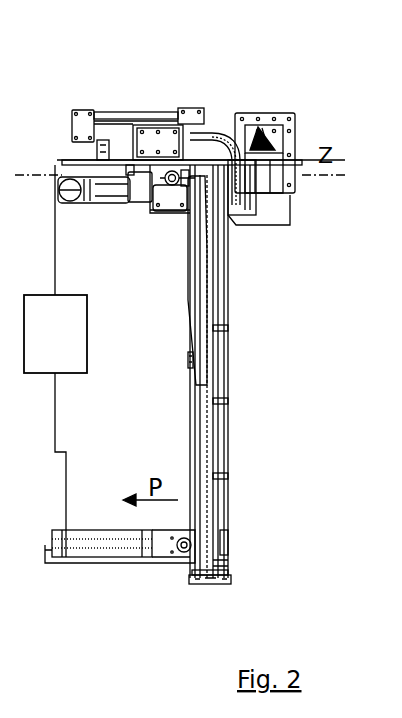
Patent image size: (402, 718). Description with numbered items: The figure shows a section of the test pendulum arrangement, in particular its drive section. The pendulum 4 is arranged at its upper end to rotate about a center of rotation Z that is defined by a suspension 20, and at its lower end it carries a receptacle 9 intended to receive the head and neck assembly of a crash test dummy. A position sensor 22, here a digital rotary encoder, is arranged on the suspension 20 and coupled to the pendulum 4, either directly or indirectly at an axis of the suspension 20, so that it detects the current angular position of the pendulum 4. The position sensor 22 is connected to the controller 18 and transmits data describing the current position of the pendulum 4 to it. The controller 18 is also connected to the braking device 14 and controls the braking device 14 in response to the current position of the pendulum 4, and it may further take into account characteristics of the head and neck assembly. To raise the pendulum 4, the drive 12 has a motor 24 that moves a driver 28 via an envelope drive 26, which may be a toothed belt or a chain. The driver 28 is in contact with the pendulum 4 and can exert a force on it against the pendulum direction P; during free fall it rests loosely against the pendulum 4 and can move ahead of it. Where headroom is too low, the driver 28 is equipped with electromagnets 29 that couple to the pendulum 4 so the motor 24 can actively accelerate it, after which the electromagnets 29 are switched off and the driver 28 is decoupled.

The drive 12 is at (100, 97).
The position sensor 22 is at (180, 163).
The suspension 20 is at (278, 124).
The envelope drive 26 is at (250, 152).
The motor 24 is at (117, 192).
The controller 18 is at (55, 334).
The driver 28 is at (190, 314).
The electromagnets 29 is at (186, 350).
The braking device 14 is at (85, 530).
The pendulum 4 is at (208, 467).
The receptacle 9 is at (225, 577).